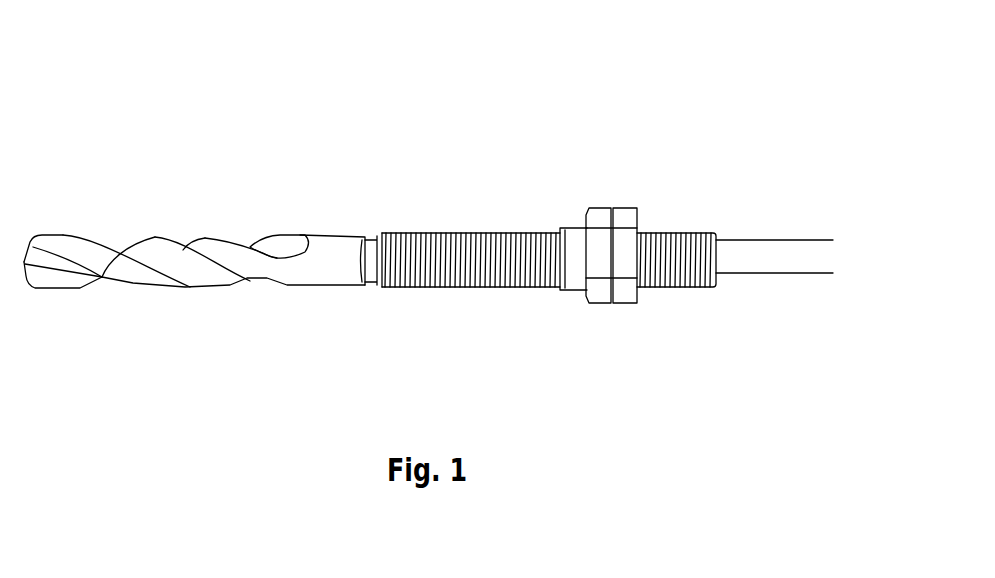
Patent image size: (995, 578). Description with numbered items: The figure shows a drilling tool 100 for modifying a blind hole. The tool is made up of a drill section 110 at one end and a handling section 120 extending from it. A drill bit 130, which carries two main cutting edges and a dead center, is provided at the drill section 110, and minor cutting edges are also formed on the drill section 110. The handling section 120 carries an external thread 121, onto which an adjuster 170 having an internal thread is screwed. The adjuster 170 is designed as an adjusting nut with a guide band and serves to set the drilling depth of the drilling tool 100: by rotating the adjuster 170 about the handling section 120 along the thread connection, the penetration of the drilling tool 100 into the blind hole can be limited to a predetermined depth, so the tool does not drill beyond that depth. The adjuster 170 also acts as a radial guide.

The drilling tool 100 is at (140, 82).
The drill section 110 is at (373, 310).
The handling section 120 is at (827, 217).
The external thread 121 is at (500, 287).
The drill bit 130 is at (70, 218).
The adjuster 170 is at (620, 320).